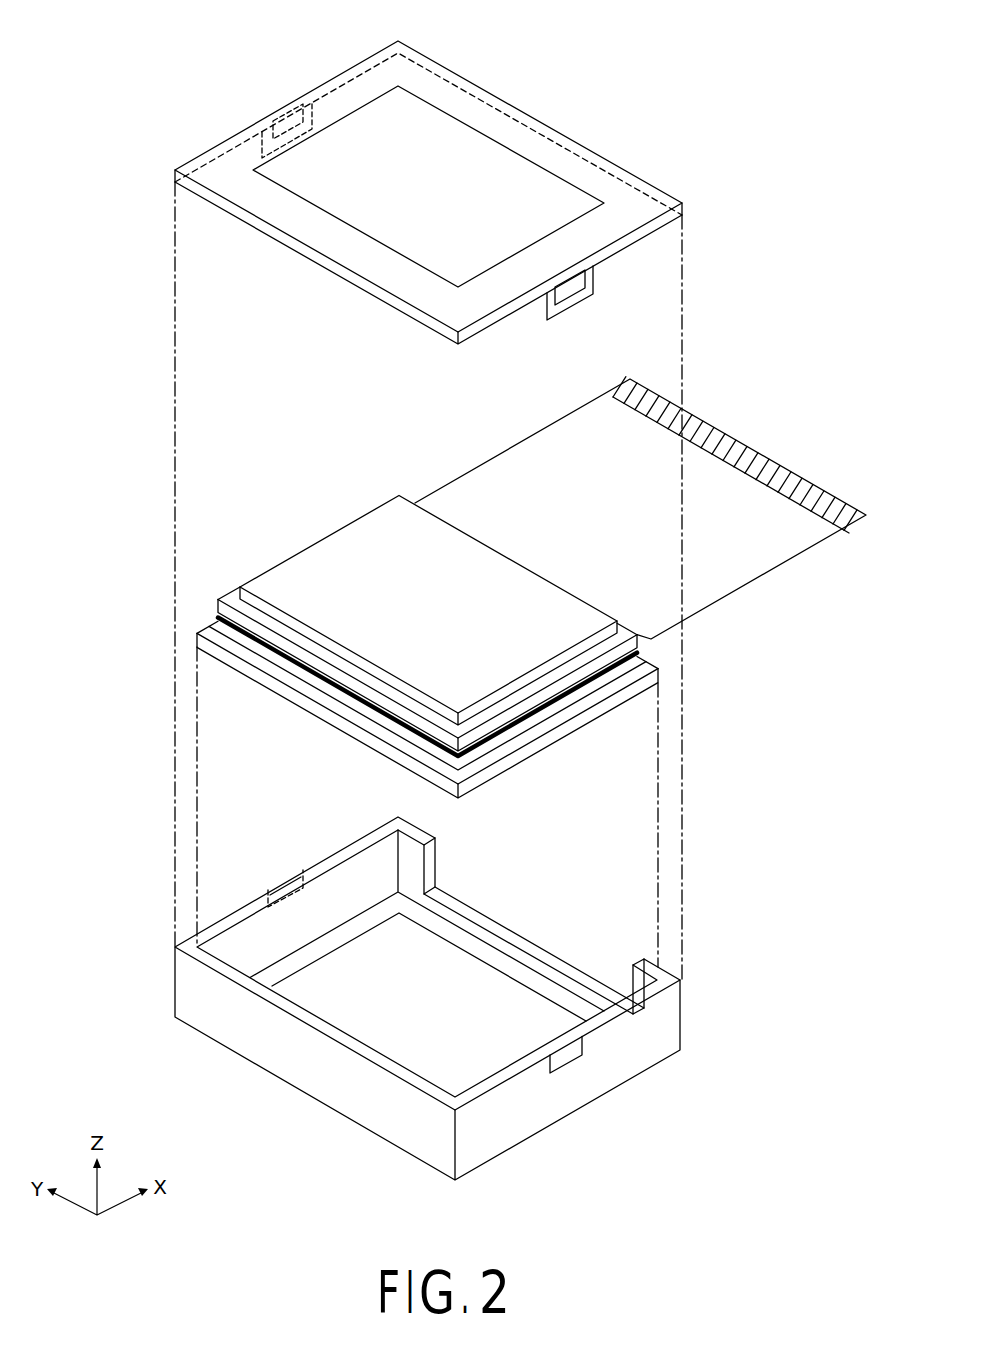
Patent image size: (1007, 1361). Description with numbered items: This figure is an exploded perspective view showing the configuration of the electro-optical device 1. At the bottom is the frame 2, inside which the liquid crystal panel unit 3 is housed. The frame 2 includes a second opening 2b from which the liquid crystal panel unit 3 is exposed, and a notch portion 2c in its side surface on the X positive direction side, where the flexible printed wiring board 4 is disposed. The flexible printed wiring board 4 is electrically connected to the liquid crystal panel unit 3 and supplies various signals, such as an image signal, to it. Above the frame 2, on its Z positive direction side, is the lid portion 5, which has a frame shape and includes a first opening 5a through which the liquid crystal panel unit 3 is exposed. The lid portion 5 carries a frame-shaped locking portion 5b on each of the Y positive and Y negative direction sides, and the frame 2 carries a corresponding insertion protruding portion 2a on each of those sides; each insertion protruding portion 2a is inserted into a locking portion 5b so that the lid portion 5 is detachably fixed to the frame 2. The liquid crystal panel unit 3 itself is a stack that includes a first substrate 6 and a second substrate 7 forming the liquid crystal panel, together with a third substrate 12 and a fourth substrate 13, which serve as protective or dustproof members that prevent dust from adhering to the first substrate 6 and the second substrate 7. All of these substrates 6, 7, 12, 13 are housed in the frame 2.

The electro-optical device 1 is at (755, 61).
The frame 2 is at (345, 1093).
The insertion protruding portion 2a is at (575, 1062).
The second opening 2b is at (343, 948).
The notch portion 2c is at (530, 947).
The liquid crystal panel unit 3 is at (254, 466).
The flexible printed wiring board 4 is at (780, 548).
The lid portion 5 is at (512, 132).
The first opening 5a is at (470, 130).
The locking portion 5b is at (577, 300).
The first substrate 6 is at (639, 651).
The second substrate 7 is at (631, 641).
The third substrate 12 is at (651, 673).
The fourth substrate 13 is at (611, 629).